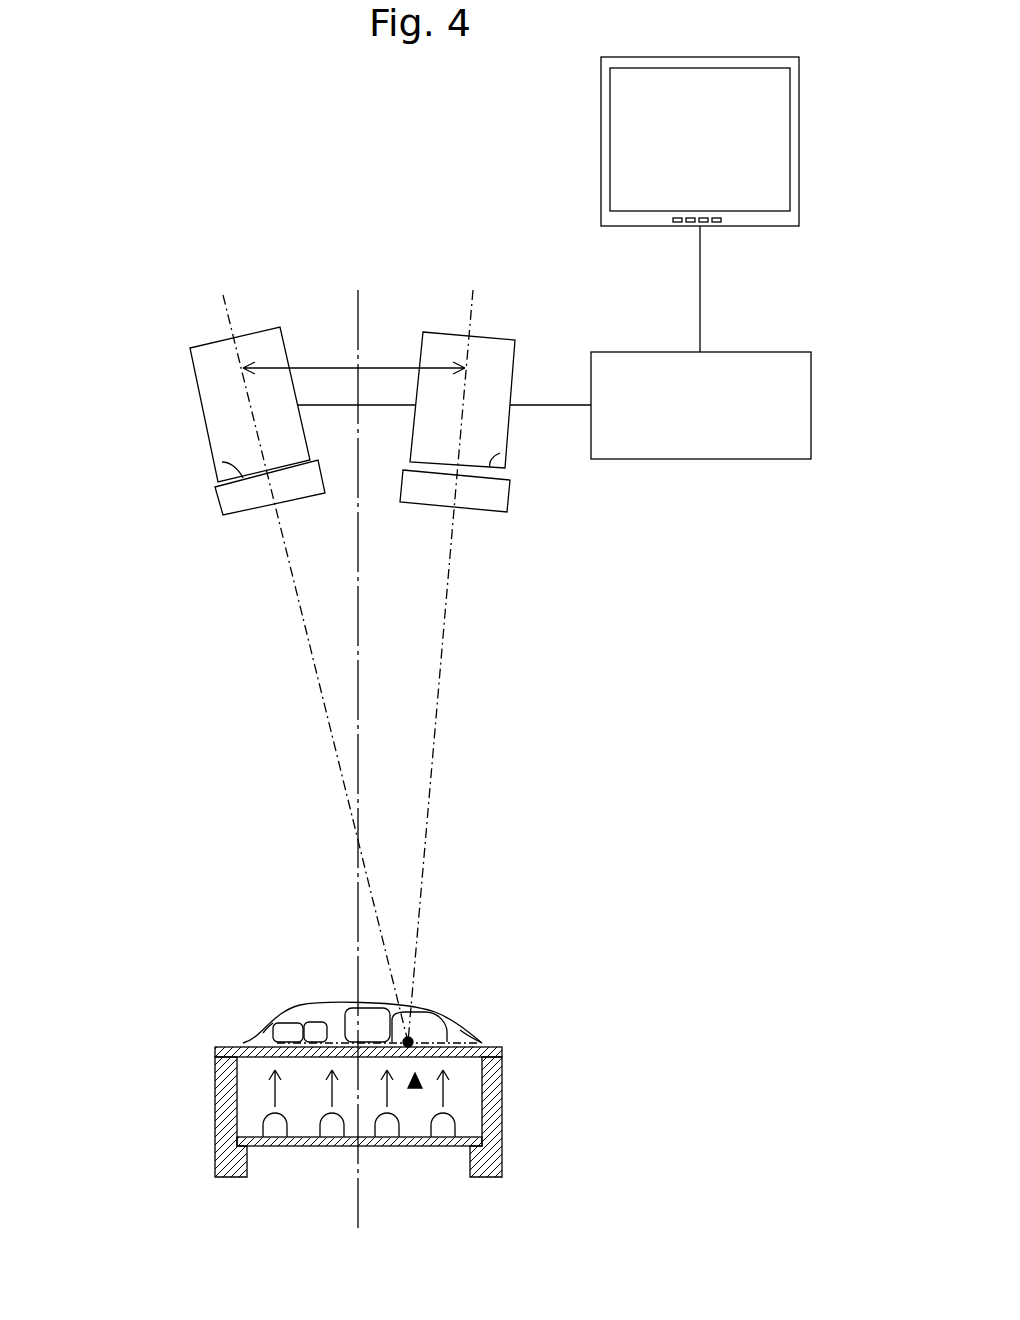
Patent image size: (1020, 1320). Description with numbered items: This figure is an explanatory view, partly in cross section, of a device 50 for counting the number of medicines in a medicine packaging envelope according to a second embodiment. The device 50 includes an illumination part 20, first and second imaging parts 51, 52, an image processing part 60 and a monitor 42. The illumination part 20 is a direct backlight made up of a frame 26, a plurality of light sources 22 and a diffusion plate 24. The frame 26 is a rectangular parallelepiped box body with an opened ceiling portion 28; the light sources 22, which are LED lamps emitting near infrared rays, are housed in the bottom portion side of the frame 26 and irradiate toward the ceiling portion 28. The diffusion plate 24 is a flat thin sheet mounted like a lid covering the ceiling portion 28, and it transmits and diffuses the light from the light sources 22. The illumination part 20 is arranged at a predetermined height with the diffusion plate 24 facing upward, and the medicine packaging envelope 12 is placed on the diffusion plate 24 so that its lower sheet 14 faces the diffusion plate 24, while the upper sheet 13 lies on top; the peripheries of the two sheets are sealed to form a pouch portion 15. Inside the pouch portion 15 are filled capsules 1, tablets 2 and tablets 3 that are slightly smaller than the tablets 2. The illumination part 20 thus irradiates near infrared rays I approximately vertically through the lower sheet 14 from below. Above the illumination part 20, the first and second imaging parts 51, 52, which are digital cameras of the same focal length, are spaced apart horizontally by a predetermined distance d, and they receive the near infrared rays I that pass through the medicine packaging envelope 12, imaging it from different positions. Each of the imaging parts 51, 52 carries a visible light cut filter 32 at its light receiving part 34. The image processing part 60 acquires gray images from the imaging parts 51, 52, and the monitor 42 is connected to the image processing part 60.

The device for counting the number of medicines in a medicine packaging envelope 50 is at (148, 208).
The first imaging part 51 is at (265, 340).
The second imaging part 52 is at (442, 340).
The predetermined distance d is at (322, 355).
The visible light cut filter 32 is at (227, 502).
The light receiving part 34 is at (243, 478).
The monitor 42 is at (601, 148).
The image processing part 60 is at (811, 395).
The capsules 1 is at (432, 1010).
The tablets 2 is at (370, 1013).
The tablets 3 is at (317, 1027).
The medicine packaging envelope 12 is at (108, 975).
The upper sheet 13 is at (270, 1022).
The lower sheet 14 is at (238, 1042).
The pouch portion 15 is at (460, 1030).
The illumination part 20 is at (524, 1120).
The light sources 22 is at (265, 1123).
The diffusion plate 24 is at (487, 1046).
The frame 26 is at (503, 1087).
The ceiling portion 28 is at (415, 1088).
The near infrared rays I is at (270, 1088).